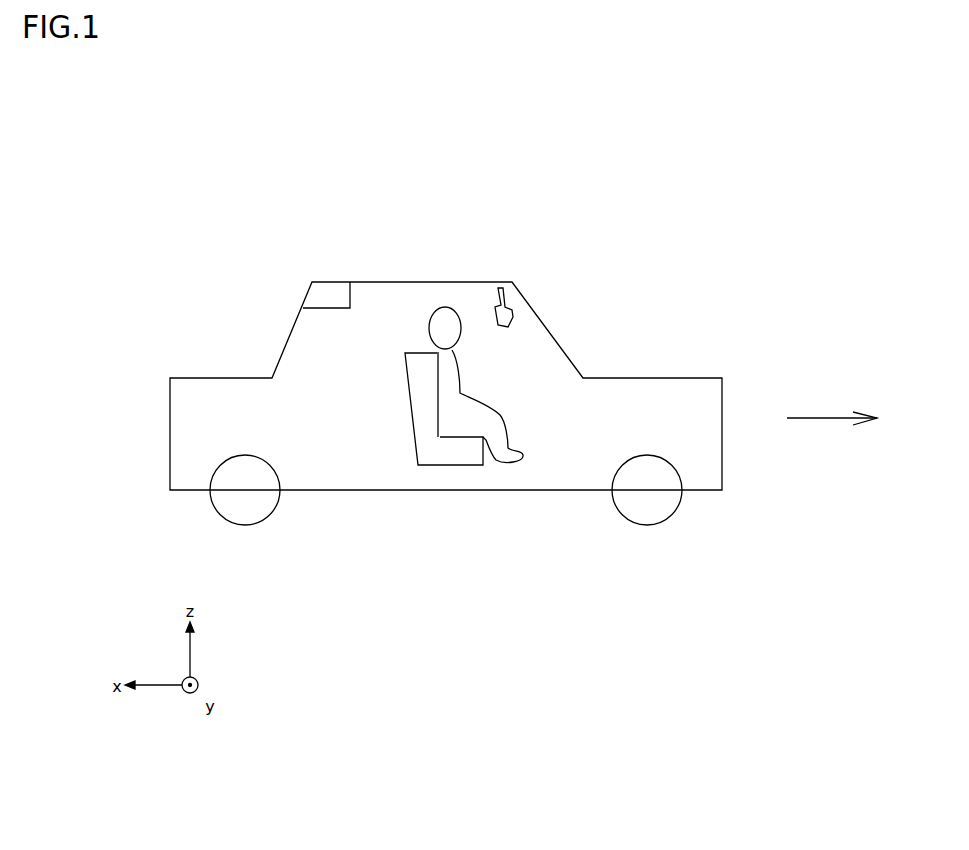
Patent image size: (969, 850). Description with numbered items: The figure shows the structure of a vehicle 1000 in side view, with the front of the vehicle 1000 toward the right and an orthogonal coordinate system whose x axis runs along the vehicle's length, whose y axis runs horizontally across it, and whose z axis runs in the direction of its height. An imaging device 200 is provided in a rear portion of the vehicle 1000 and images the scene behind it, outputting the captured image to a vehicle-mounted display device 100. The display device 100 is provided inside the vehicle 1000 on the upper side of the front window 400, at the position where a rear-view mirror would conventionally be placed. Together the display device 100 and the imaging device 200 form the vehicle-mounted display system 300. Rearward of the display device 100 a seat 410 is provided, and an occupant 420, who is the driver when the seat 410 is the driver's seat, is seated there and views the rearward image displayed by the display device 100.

The vehicle-mounted display device 100 is at (508, 310).
The imaging device 200 is at (327, 297).
The vehicle-mounted display system 300 is at (361, 206).
The front window 400 is at (562, 347).
The seat 410 is at (440, 453).
The occupant 420 is at (442, 306).
The vehicle 1000 is at (478, 685).